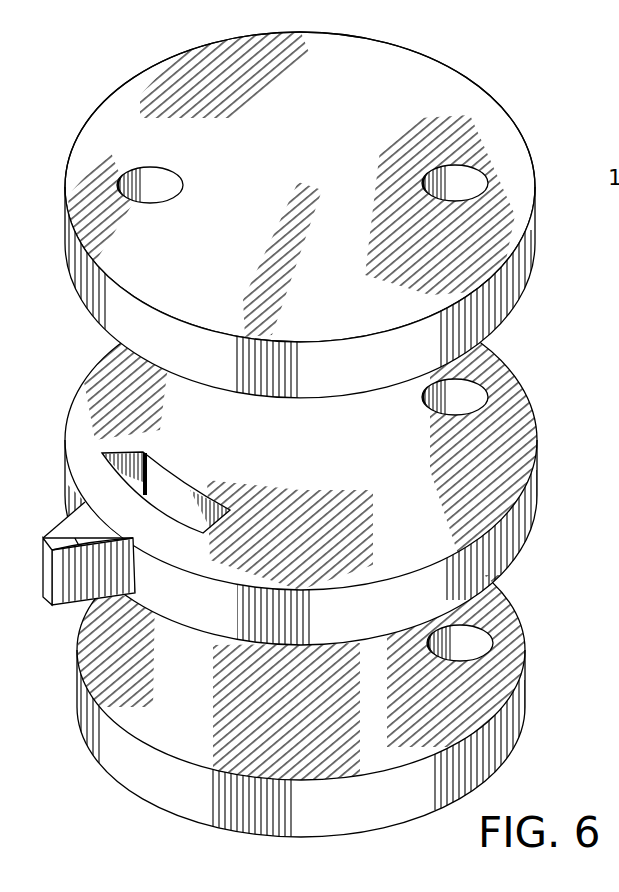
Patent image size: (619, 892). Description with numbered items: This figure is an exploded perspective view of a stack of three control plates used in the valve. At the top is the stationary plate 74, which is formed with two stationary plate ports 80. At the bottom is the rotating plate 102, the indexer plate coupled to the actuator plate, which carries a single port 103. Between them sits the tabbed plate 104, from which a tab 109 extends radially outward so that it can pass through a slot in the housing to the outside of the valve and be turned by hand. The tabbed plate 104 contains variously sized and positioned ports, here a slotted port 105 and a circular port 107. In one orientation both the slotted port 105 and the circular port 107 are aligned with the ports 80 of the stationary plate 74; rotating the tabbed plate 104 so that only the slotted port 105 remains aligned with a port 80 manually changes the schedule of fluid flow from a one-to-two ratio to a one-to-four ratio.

The stationary plate 74 is at (495, 228).
The stationary plate ports 80 is at (140, 178).
The rotating plate 102 is at (433, 708).
The port 103 is at (470, 649).
The tabbed plate 104 is at (483, 465).
The slotted port 105 is at (118, 453).
The circular port 107 is at (462, 390).
The tab 109 is at (83, 575).